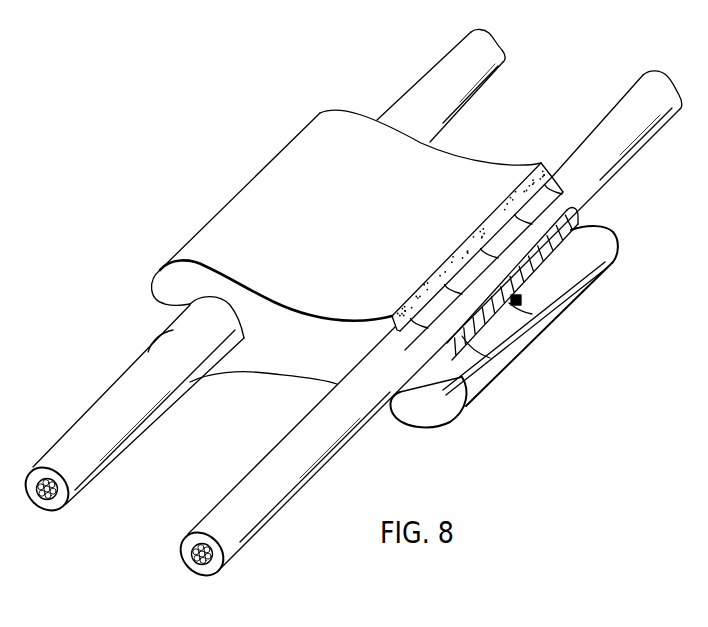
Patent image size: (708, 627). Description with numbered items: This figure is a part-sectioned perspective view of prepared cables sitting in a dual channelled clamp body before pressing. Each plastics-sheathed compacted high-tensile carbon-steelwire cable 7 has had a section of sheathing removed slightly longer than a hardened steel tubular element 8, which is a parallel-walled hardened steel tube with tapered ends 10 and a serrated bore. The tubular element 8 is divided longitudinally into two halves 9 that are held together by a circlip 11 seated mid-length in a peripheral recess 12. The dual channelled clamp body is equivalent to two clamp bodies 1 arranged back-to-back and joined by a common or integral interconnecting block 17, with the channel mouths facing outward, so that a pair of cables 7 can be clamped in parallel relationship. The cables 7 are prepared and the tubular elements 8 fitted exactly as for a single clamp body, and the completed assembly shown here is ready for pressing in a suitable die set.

The clamp body 1 is at (230, 228).
The cable 7 is at (128, 418).
The tubular element 8 is at (480, 333).
The halves 9 is at (470, 360).
The tapered ends 10 is at (420, 298).
The circlip 11 is at (470, 248).
The peripheral recess 12 is at (522, 297).
The interconnecting block 17 is at (307, 355).